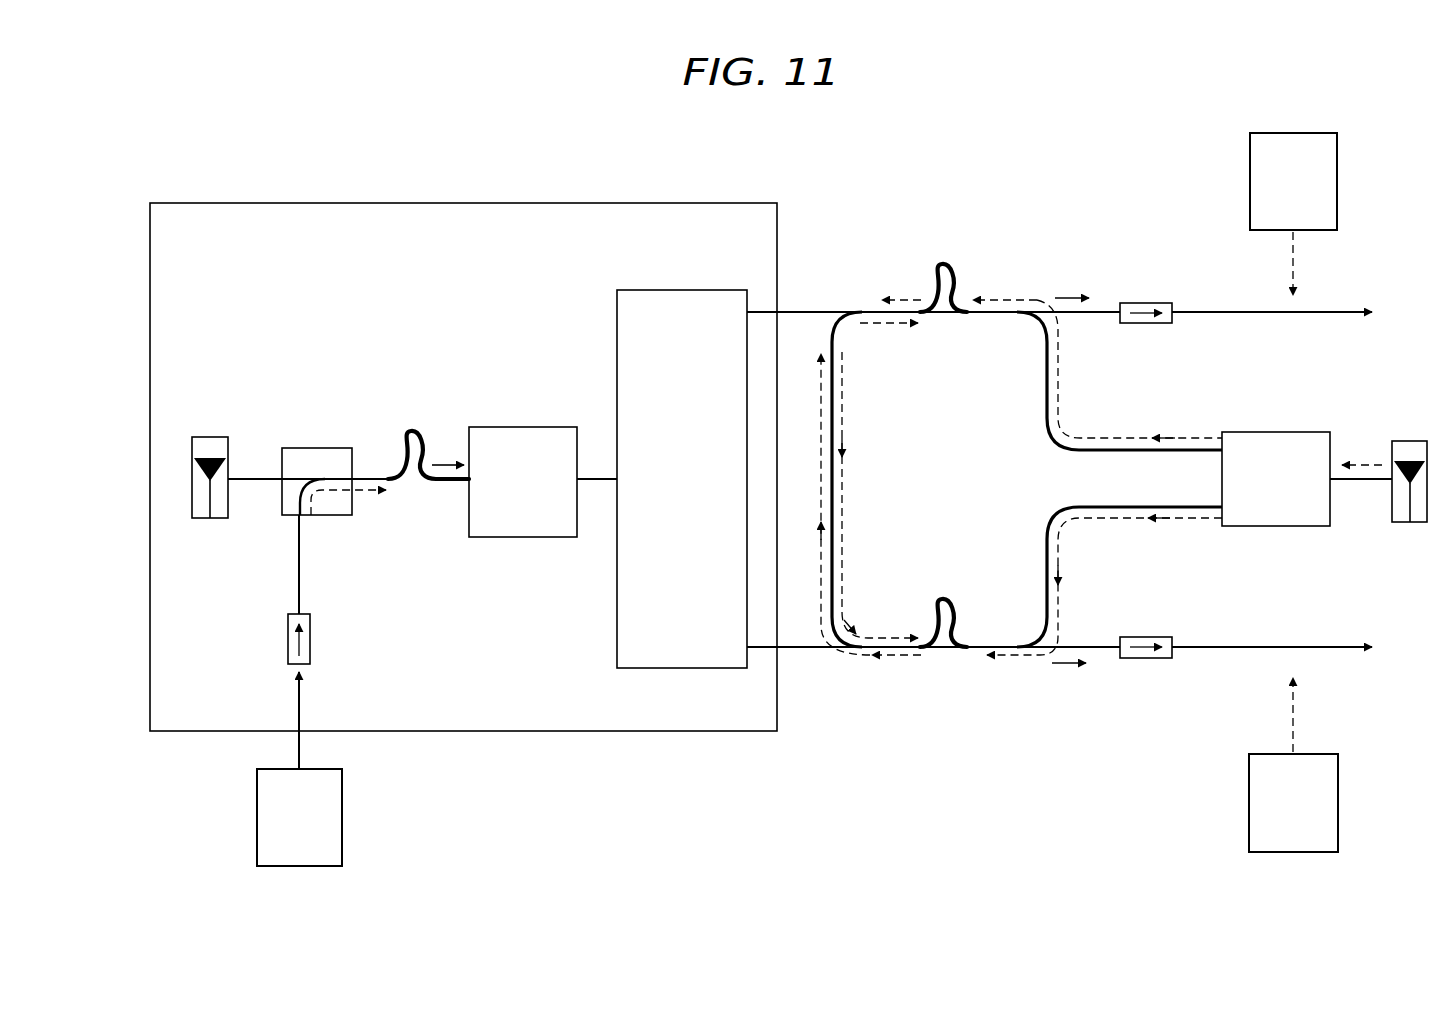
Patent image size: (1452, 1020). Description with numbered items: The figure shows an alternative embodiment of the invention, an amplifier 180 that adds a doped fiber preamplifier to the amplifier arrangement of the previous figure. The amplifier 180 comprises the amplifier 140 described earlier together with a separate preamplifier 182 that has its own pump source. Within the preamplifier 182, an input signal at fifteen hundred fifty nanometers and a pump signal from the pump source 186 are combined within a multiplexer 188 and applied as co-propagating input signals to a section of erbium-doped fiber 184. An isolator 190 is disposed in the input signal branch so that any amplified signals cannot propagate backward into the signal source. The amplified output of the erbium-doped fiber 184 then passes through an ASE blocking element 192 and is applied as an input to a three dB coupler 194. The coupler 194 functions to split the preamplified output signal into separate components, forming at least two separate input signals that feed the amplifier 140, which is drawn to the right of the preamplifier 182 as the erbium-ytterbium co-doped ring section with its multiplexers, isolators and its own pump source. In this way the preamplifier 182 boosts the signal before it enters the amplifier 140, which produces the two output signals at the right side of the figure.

The amplifier 180 is at (789, 126).
The preamplifier 182 is at (539, 203).
The erbium-doped fiber 184 is at (421, 436).
The pump source 186 is at (210, 437).
The multiplexer 188 is at (320, 448).
The isolator 190 is at (288, 637).
The ASE blocking element 192 is at (543, 427).
The 3 dB coupler 194 is at (685, 290).
The amplifier 140 is at (735, 776).